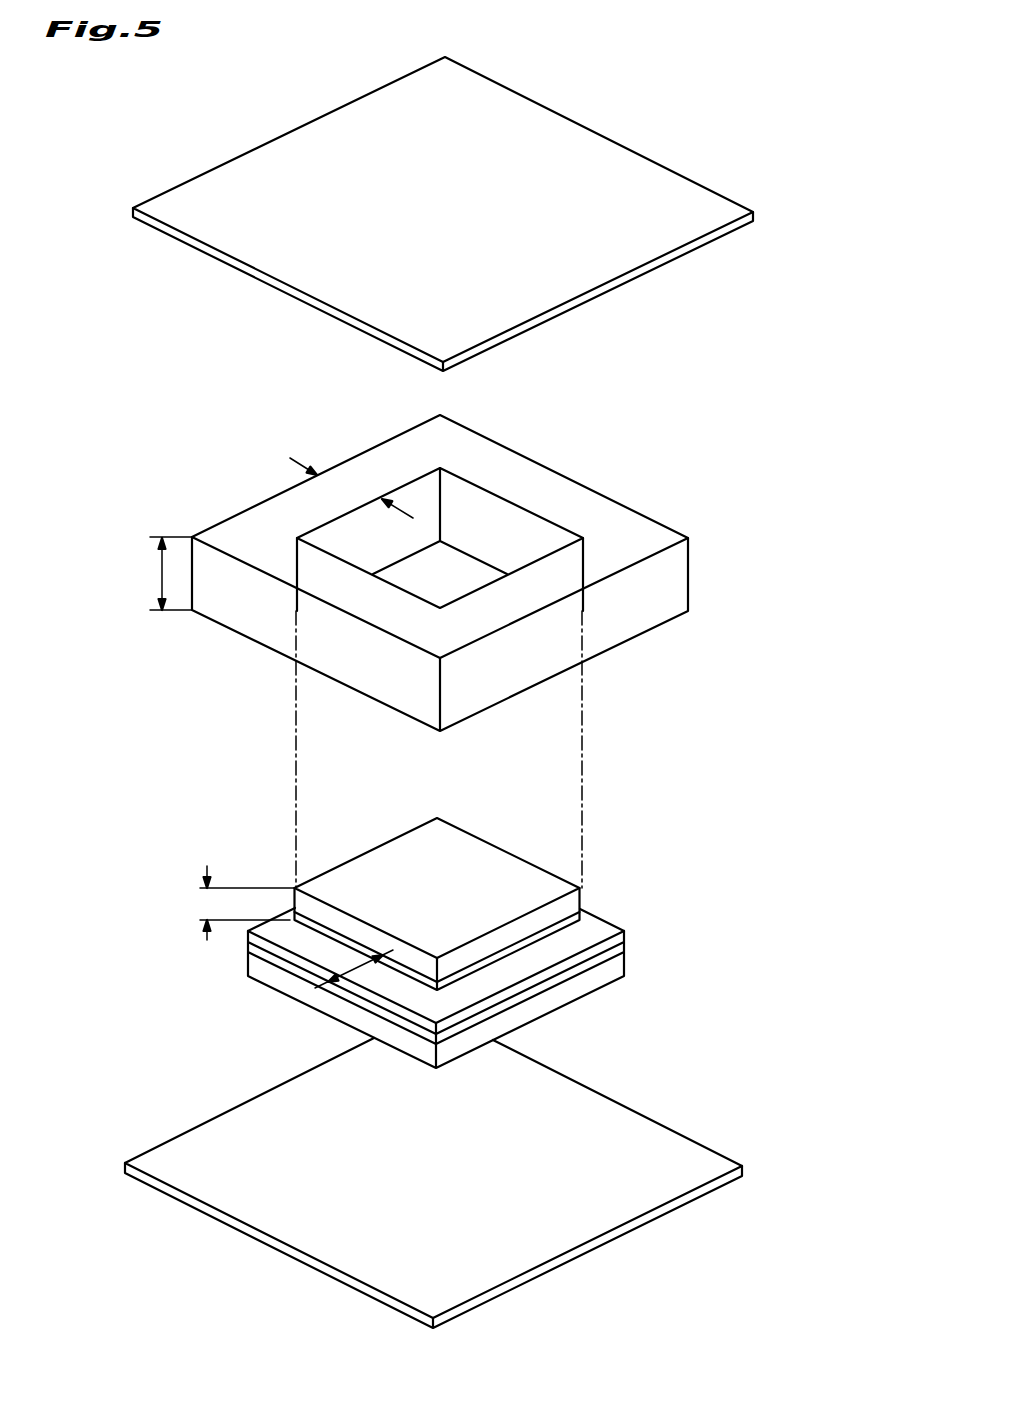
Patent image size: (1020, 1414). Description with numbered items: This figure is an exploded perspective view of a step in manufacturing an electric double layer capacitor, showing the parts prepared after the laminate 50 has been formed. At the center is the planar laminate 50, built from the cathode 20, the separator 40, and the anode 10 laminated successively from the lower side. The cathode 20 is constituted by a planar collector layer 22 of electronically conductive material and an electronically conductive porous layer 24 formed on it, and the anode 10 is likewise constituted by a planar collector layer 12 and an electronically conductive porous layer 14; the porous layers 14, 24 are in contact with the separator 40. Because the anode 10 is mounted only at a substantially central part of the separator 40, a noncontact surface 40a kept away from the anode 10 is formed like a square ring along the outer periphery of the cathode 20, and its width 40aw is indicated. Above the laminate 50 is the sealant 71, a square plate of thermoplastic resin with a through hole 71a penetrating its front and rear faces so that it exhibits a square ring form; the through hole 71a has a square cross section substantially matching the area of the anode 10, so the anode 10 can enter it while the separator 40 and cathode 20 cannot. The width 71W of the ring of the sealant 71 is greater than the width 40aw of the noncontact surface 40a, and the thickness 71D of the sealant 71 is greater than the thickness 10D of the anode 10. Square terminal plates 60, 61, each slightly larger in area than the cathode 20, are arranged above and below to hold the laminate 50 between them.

The terminal plate 60 is at (698, 184).
The terminal plate 61 is at (698, 1142).
The sealant 71 is at (422, 566).
The through hole 71a is at (525, 530).
The width of the ring of the sealant 71W is at (357, 490).
The thickness of the sealant 71D is at (156, 574).
The laminate 50 is at (457, 944).
The anode 10 is at (433, 904).
The collector layer 12 is at (581, 898).
The porous layer 14 is at (582, 915).
The thickness of the anode 10D is at (207, 910).
The separator 40 is at (475, 989).
The noncontact surface 40a is at (392, 984).
The width of the noncontact part 40aw is at (353, 970).
The cathode 20 is at (499, 1005).
The porous layer 24 is at (625, 947).
The collector layer 22 is at (625, 967).